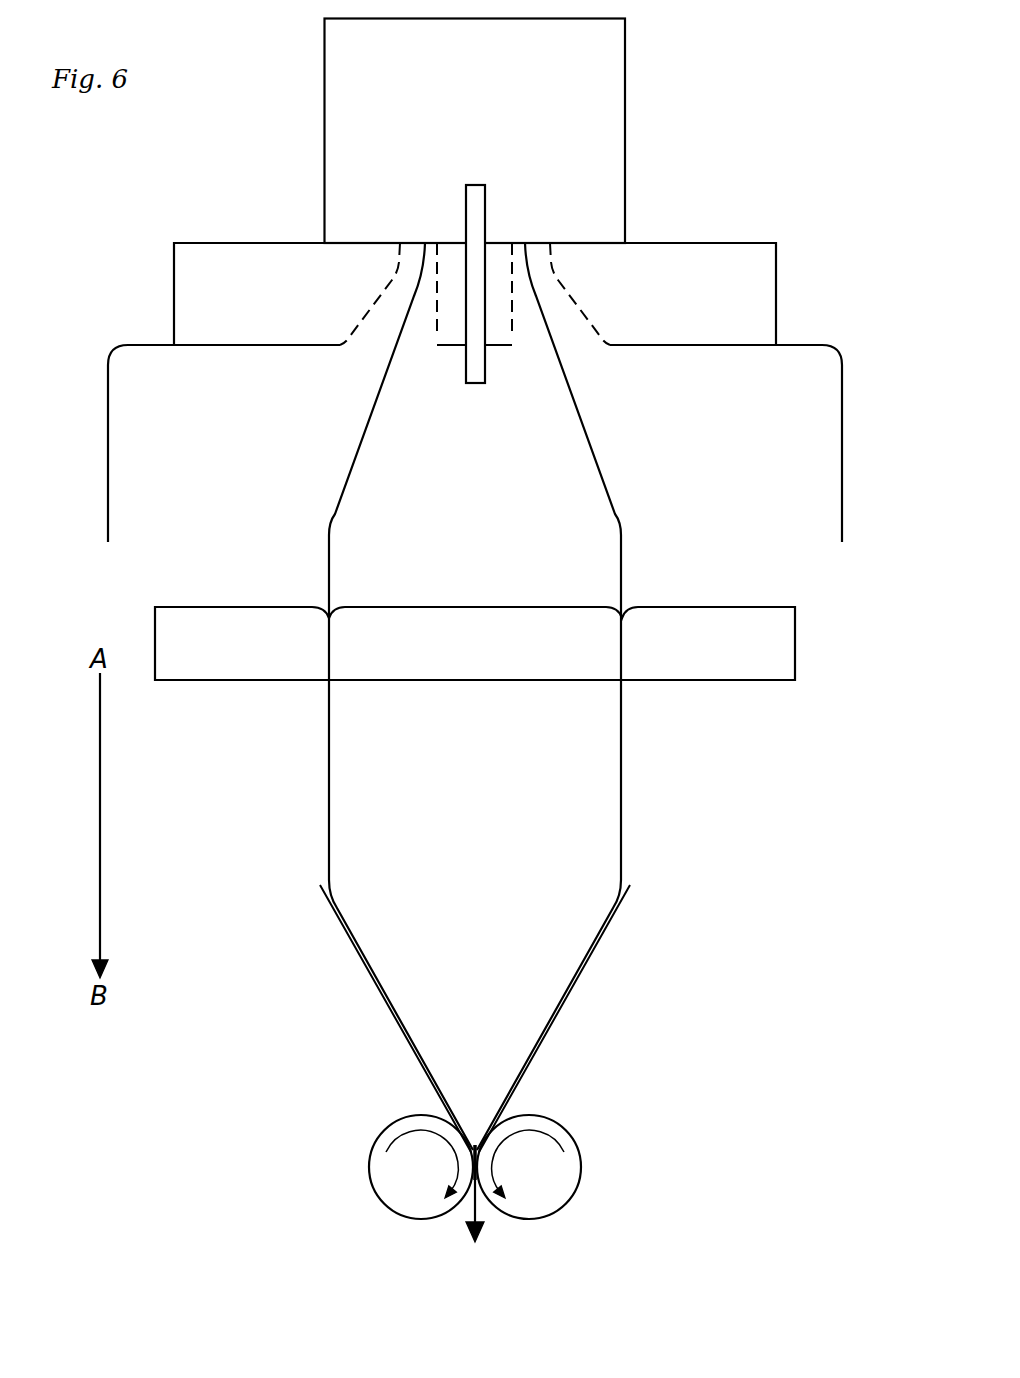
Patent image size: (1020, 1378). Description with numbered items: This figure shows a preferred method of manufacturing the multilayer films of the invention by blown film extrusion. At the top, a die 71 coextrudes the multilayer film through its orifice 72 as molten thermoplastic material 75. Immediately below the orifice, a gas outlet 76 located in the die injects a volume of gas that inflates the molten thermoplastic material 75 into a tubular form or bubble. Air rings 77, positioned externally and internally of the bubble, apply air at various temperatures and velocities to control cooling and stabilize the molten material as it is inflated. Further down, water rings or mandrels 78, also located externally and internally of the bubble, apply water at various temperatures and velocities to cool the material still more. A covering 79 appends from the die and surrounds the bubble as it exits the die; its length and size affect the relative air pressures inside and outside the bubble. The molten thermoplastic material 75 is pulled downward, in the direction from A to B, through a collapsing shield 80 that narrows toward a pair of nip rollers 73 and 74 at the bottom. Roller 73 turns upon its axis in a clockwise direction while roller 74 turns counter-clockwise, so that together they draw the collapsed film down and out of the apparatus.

The die 71 is at (625, 83).
The orifice 72 is at (528, 243).
The nip roller 73 is at (368, 1155).
The nip roller 74 is at (580, 1160).
The molten thermoplastic material 75 is at (607, 485).
The gas outlet 76 is at (485, 365).
The air rings 77 is at (174, 285).
The water rings 78 is at (577, 606).
The covering 79 is at (108, 427).
The collapsing shield 80 is at (565, 998).